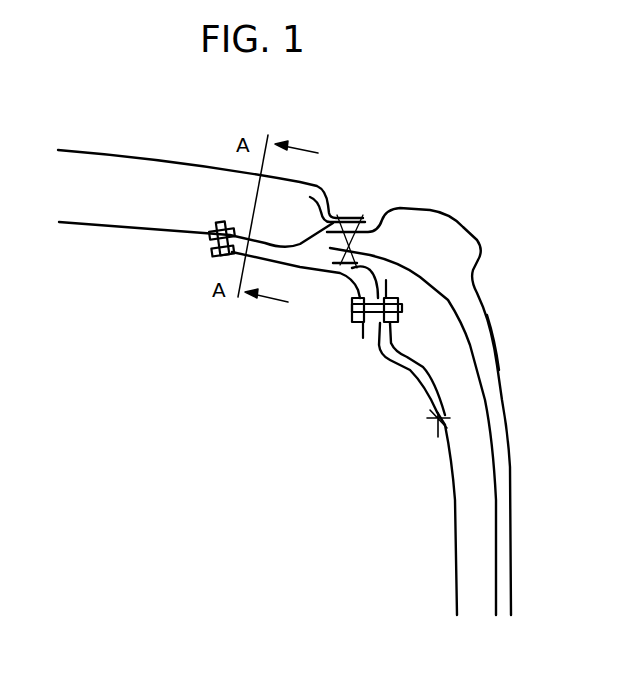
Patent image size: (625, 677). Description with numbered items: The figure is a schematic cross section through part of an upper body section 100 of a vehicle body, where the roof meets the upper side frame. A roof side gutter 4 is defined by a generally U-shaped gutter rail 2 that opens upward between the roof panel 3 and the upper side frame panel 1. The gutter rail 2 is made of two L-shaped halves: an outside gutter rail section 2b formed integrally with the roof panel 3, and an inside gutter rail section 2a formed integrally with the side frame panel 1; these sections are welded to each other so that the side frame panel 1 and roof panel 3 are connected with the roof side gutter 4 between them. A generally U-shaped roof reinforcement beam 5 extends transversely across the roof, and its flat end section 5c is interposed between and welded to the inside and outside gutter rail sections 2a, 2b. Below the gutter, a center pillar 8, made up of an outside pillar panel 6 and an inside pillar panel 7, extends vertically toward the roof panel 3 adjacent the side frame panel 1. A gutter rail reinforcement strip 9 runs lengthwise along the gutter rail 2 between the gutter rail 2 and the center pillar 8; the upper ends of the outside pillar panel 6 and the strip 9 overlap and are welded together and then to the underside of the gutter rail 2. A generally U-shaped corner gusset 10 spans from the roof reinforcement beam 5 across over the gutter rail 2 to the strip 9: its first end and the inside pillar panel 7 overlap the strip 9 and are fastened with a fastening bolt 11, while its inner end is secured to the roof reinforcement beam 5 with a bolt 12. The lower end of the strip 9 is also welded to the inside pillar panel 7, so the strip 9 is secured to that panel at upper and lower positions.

The upper body section 100 is at (198, 366).
The upper side frame panel 1 is at (500, 358).
The gutter rail 2 is at (400, 170).
The inside gutter rail section 2a is at (357, 211).
The outside gutter rail section 2b is at (363, 215).
The roof panel 3 is at (193, 158).
The roof side gutter 4 is at (335, 188).
The roof reinforcement beam 5 is at (123, 228).
The flat end section 5c is at (310, 197).
The outside center pillar panel 6 is at (491, 437).
The inside center pillar panel 7 is at (455, 483).
The center pillar 8 is at (449, 431).
The gutter rail reinforcement strip 9 is at (392, 367).
The corner gusset 10 is at (313, 272).
The fastening bolt 11 is at (352, 316).
The bolt 12 is at (213, 257).